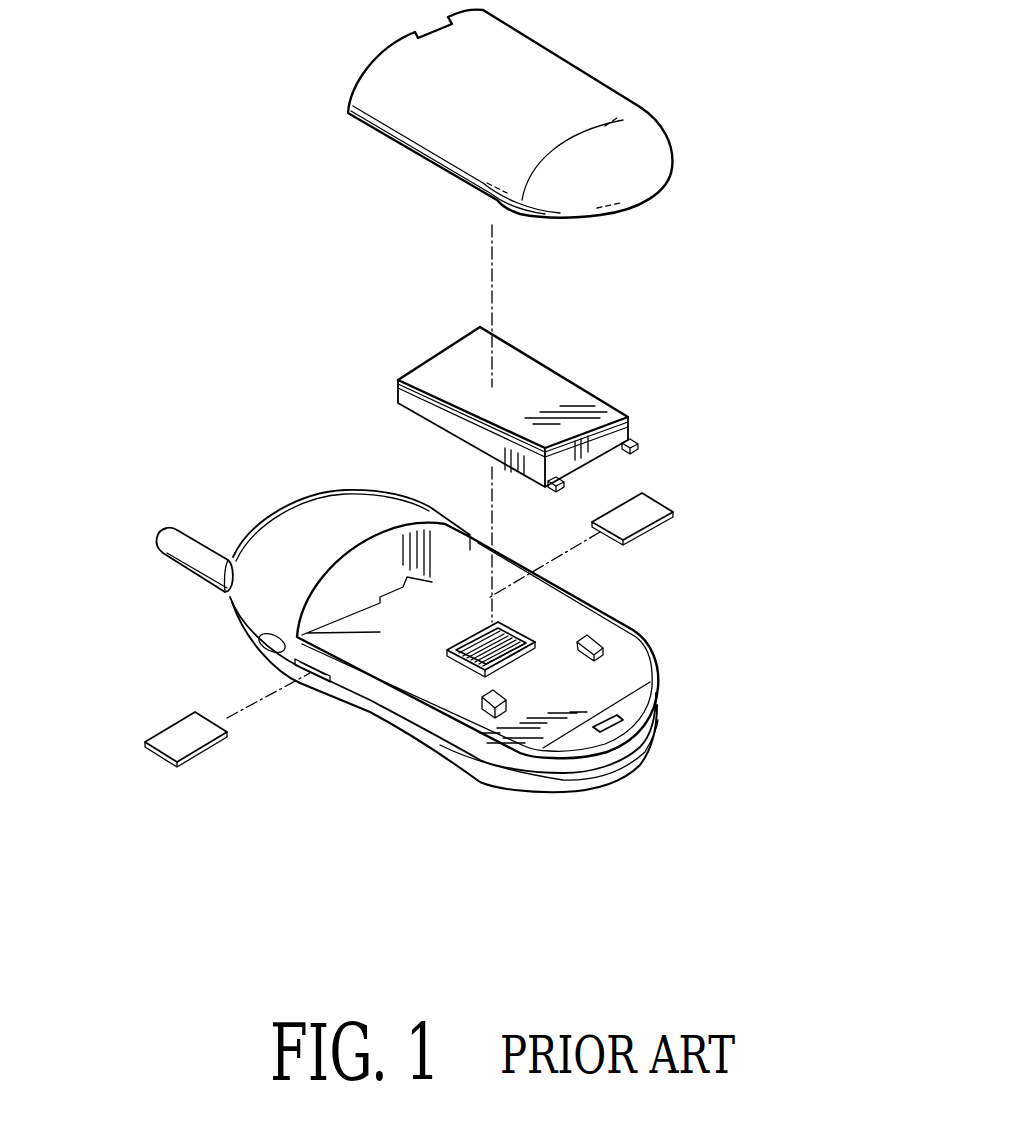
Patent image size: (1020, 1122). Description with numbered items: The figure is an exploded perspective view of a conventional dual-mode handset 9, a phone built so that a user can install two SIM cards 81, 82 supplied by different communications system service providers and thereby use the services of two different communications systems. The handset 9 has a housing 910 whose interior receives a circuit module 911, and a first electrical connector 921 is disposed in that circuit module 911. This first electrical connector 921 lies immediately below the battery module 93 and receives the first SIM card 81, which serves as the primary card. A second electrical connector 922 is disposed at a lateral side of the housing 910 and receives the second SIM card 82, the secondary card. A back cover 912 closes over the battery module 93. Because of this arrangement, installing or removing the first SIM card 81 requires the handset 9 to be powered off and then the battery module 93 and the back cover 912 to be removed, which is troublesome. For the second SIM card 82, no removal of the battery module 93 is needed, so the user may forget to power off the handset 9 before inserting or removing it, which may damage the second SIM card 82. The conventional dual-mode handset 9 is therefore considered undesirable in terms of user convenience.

The dual-mode handset 9 is at (158, 372).
The housing 910 is at (339, 508).
The circuit module 911 is at (378, 628).
The back cover 912 is at (583, 93).
The battery module 93 is at (553, 397).
The first electrical connector 921 is at (480, 665).
The second electrical connector 922 is at (305, 668).
The first SIM card 81 is at (645, 512).
The second SIM card 82 is at (188, 735).